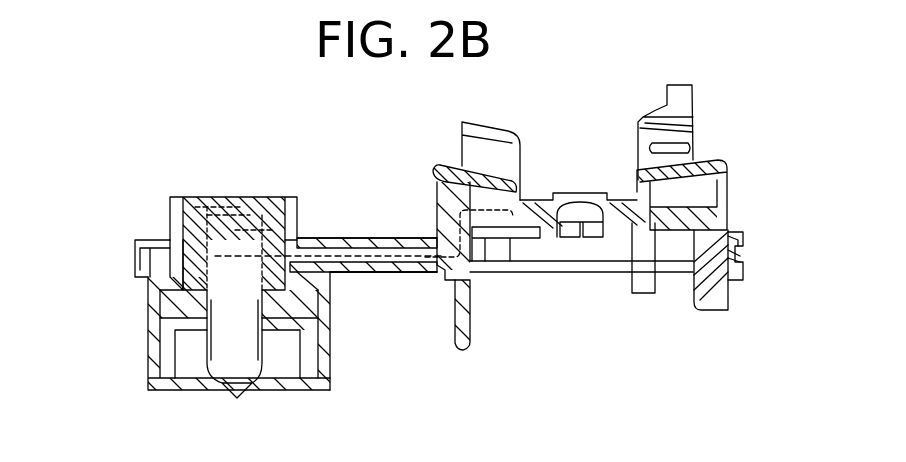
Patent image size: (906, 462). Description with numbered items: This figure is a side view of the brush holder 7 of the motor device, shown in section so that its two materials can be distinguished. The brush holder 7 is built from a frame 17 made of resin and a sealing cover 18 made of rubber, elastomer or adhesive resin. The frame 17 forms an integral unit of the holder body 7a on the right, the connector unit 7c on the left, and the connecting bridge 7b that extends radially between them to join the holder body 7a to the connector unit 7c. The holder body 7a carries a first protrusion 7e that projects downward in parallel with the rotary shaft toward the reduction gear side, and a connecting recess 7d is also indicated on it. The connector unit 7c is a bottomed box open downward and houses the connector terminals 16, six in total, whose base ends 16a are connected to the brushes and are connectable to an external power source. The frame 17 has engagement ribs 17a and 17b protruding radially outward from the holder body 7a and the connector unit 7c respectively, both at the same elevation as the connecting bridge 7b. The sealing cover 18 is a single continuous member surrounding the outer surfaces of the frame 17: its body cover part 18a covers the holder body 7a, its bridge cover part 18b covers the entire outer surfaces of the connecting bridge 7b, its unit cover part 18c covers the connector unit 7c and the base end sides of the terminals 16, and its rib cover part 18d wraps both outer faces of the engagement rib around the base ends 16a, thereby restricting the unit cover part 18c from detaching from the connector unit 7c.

The brush holder 7 is at (732, 65).
The holder body 7a is at (723, 213).
The connecting bridge 7b is at (365, 247).
The connector unit 7c is at (105, 275).
The connecting recess 7d is at (702, 302).
The first protrusion 7e is at (464, 348).
The connector terminals 16 is at (217, 377).
The base ends 16a is at (217, 207).
The frame 17 is at (728, 292).
The engagement rib 17a is at (735, 258).
The engagement rib 17b is at (156, 252).
The sealing cover 18 is at (318, 238).
The body cover part 18a is at (736, 238).
The bridge cover part 18b is at (378, 272).
The unit cover part 18c is at (266, 202).
The rib cover part 18d is at (135, 245).